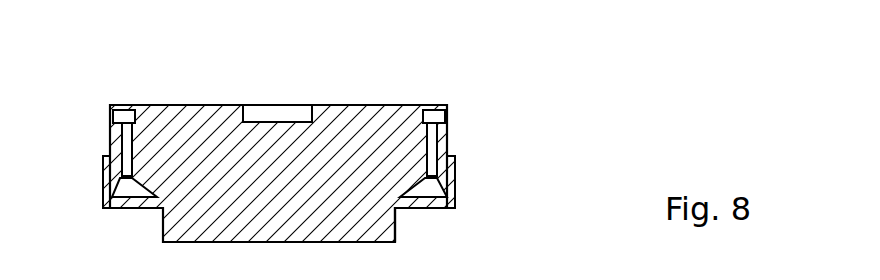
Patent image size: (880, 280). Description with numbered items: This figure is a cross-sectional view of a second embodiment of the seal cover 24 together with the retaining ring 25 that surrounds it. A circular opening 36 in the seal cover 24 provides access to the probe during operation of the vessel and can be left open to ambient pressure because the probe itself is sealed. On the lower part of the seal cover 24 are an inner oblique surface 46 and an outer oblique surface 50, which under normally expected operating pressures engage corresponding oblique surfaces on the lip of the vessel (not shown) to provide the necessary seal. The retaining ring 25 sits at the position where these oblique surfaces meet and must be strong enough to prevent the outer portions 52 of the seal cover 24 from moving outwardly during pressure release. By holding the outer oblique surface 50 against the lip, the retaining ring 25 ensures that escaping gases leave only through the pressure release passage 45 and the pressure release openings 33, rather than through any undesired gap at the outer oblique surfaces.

The seal cover 24 is at (403, 68).
The circular opening 36 is at (278, 113).
The pressure release openings 33 is at (122, 121).
The retaining ring 25 is at (107, 202).
The outer portions 52 is at (106, 180).
The pressure release passage 45 is at (128, 182).
The outer oblique surface 50 is at (437, 190).
The inner oblique surface 46 is at (397, 210).